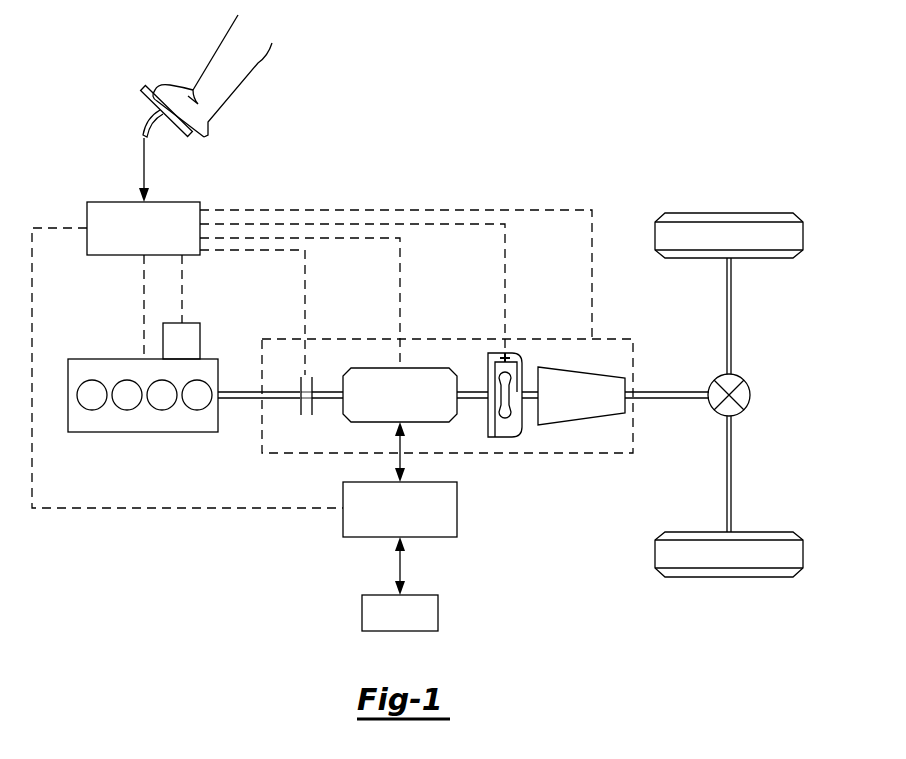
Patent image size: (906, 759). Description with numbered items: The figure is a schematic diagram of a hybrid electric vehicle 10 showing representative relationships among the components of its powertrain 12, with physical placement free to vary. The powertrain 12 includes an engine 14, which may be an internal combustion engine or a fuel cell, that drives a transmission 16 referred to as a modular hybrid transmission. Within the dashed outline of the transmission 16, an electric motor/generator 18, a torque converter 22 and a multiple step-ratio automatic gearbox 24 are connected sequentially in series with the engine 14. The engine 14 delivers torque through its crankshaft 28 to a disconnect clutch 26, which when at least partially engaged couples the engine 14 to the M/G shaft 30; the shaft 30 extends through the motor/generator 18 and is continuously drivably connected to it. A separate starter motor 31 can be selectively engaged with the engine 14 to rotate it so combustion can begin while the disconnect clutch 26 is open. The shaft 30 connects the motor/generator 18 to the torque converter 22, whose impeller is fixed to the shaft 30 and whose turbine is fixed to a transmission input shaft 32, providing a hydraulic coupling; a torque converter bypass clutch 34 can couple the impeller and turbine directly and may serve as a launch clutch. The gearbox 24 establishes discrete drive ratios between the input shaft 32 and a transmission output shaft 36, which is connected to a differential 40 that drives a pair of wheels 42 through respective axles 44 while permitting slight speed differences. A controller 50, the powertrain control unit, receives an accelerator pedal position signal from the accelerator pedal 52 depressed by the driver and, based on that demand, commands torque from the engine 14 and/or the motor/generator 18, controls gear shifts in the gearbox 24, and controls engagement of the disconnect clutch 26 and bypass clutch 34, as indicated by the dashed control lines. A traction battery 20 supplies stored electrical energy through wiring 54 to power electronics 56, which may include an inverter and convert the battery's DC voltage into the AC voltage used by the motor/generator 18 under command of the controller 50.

The hybrid electric vehicle 10 is at (612, 148).
The powertrain 12 is at (242, 552).
The engine 14 is at (86, 358).
The transmission 16 is at (424, 339).
The electric motor/generator 18 is at (380, 368).
The traction battery 20 is at (361, 614).
The torque converter 22 is at (499, 438).
The gearbox 24 is at (576, 426).
The disconnect clutch 26 is at (313, 415).
The crankshaft 28 is at (245, 391).
The M/G shaft 30 is at (331, 391).
The starter motor 31 is at (198, 325).
The transmission input shaft 32 is at (530, 390).
The torque converter bypass clutch 34 is at (506, 352).
The transmission output shaft 36 is at (681, 391).
The differential 40 is at (751, 393).
The wheels 42 is at (701, 212).
The axles 44 is at (732, 315).
The controller 50 is at (99, 201).
The accelerator pedal 52 is at (140, 100).
The wiring 54 is at (399, 565).
The power electronics 56 is at (458, 510).